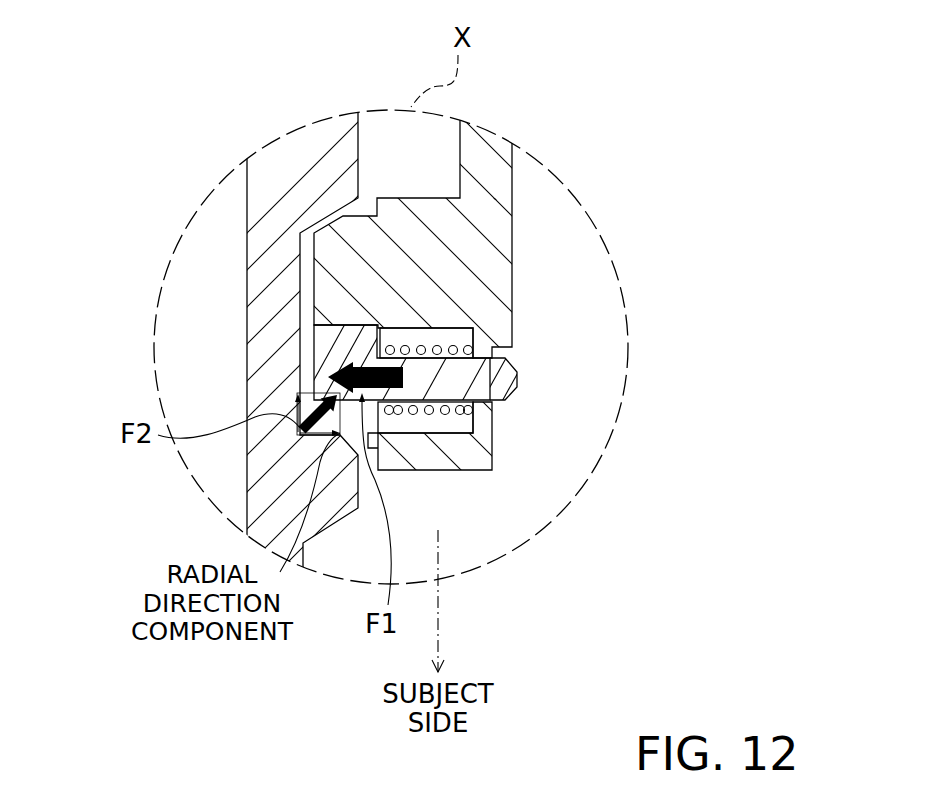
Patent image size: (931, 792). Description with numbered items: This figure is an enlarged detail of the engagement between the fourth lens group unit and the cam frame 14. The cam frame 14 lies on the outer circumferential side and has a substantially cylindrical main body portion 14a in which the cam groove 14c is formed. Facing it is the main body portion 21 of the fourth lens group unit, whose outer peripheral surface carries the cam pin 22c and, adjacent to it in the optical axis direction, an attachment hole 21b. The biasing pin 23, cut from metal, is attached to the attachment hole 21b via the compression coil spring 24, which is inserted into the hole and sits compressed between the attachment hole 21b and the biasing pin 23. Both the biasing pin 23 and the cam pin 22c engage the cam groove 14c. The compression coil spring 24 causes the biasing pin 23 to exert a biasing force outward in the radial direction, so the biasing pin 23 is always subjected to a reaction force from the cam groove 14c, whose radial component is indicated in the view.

The cam frame 14 is at (434, 323).
The main body portion 14a is at (283, 153).
The cam groove 14c is at (493, 402).
The main body portion 21 is at (362, 285).
The attachment hole 21b is at (405, 432).
The cam pin 22c is at (325, 283).
The biasing pin 23 is at (500, 397).
The compression coil spring 24 is at (437, 350).